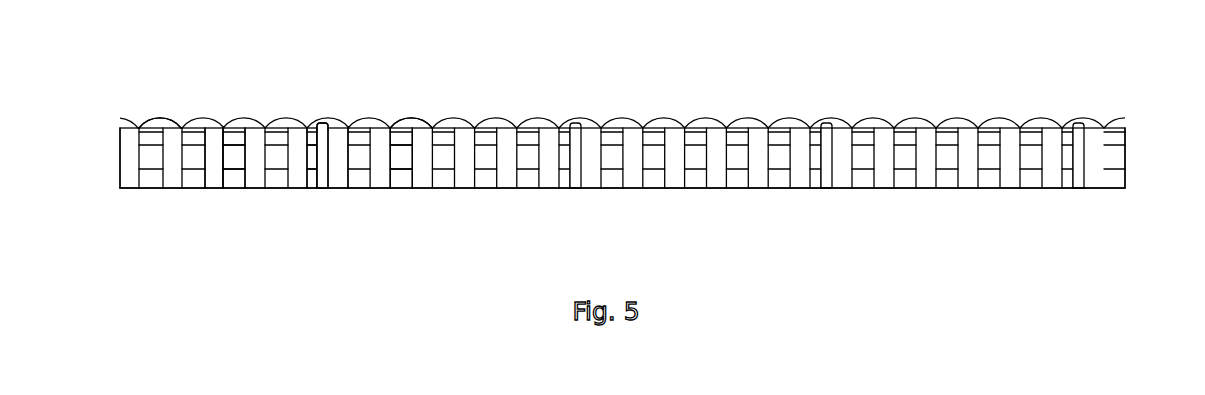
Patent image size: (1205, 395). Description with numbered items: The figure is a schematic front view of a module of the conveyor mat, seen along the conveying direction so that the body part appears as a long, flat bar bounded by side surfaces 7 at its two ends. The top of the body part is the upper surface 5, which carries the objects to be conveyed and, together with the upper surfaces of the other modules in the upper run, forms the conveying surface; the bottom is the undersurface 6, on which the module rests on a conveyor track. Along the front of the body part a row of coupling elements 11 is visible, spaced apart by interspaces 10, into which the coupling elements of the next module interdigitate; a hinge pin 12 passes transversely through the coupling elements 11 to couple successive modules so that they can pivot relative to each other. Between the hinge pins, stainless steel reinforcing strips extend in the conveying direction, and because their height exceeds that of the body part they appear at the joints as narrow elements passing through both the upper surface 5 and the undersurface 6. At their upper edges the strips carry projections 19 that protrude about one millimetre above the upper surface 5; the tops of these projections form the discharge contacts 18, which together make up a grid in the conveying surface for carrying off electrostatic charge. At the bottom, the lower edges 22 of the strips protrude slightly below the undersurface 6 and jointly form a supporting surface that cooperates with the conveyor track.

The upper surface 5 is at (188, 121).
The coupling elements 11 is at (215, 140).
The interspaces 10 is at (235, 138).
The discharge contacts 18 is at (323, 124).
The projections 19 is at (334, 125).
The lower edges 22 is at (410, 122).
The hinge pins 12 is at (400, 158).
The undersurface 6 is at (167, 188).
The side surfaces 7 is at (120, 152).